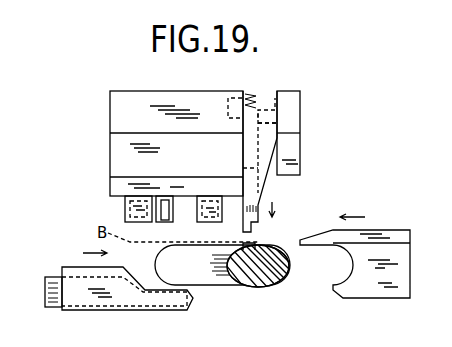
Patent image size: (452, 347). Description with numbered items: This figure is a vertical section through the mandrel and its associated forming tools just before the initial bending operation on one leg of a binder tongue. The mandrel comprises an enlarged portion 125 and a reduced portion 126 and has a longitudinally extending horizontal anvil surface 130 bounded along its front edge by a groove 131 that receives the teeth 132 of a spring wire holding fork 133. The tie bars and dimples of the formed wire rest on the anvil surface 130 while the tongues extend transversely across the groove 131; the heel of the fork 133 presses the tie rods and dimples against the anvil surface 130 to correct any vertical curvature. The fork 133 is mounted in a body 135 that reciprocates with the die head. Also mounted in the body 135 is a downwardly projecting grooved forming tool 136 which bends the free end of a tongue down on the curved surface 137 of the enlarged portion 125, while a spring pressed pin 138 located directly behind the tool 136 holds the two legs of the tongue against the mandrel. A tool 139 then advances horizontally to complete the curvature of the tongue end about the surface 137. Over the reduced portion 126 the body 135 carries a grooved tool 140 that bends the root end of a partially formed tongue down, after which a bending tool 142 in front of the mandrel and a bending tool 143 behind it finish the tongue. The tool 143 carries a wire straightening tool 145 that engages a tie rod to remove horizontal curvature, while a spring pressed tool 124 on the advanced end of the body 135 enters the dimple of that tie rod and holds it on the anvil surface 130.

The spring pressed tool 124 is at (268, 157).
The enlarged portion of the mandrel 125 is at (218, 274).
The reduced portion of the mandrel 126 is at (273, 284).
The anvil surface 130 is at (256, 249).
The groove 131 is at (289, 258).
The teeth 132 is at (247, 228).
The spring wire holding fork 133 is at (277, 123).
The body 135 is at (101, 150).
The grooved forming tool 136 is at (130, 210).
The curved surface 137 is at (160, 250).
The spring pressed pin 138 is at (168, 195).
The tool 139 is at (125, 297).
The grooved tool 140 is at (210, 202).
The bending tool 142 is at (190, 300).
The bending tool 143 is at (360, 296).
The wire straightening tool 145 is at (322, 235).